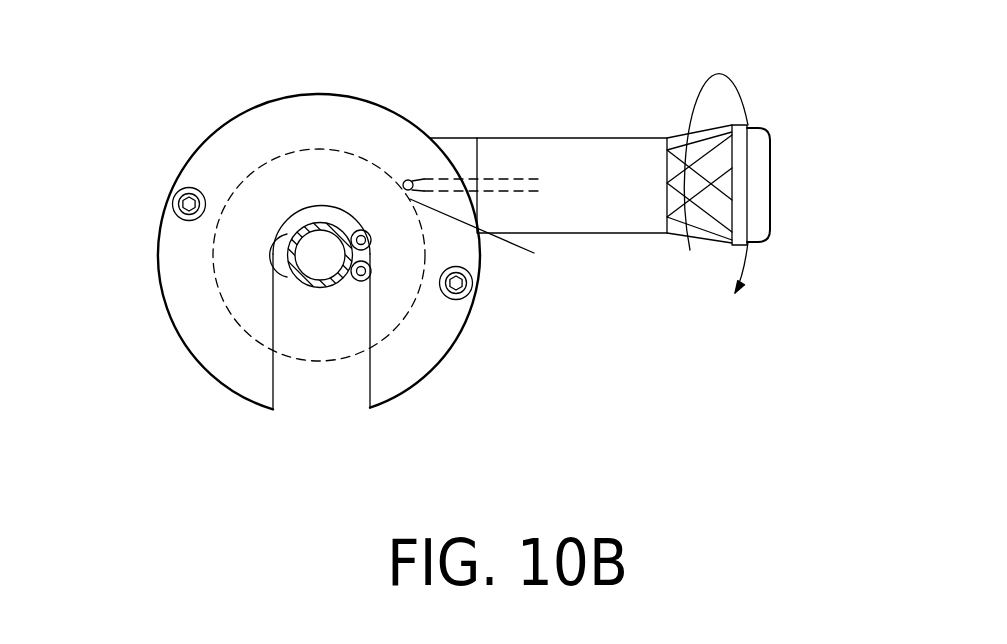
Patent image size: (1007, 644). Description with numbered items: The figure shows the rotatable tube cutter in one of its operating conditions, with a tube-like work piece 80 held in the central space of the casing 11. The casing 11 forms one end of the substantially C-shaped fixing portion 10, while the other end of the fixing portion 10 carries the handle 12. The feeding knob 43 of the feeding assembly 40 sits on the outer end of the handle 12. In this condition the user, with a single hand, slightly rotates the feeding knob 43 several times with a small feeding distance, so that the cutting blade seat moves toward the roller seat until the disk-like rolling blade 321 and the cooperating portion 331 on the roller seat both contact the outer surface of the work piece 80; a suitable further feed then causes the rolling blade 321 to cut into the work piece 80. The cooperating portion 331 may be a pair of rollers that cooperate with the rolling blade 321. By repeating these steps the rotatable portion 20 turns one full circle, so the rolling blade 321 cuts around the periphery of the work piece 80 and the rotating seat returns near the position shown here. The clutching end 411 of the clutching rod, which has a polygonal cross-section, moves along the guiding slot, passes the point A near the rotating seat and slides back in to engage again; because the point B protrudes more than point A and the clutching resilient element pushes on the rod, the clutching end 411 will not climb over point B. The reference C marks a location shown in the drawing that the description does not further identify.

The fixing portion 10 is at (582, 130).
The casing 11 is at (277, 118).
The handle 12 is at (641, 143).
The rotatable portion 20 is at (220, 292).
The feeding assembly 40 is at (767, 115).
The feeding knob 43 is at (760, 190).
The work piece 80 is at (323, 288).
The rolling blade 321 is at (273, 253).
The cooperating portion 331 is at (371, 252).
The clutching end 411 is at (416, 181).
The point A is at (487, 235).
The point B is at (414, 178).
The reference curve C is at (388, 175).